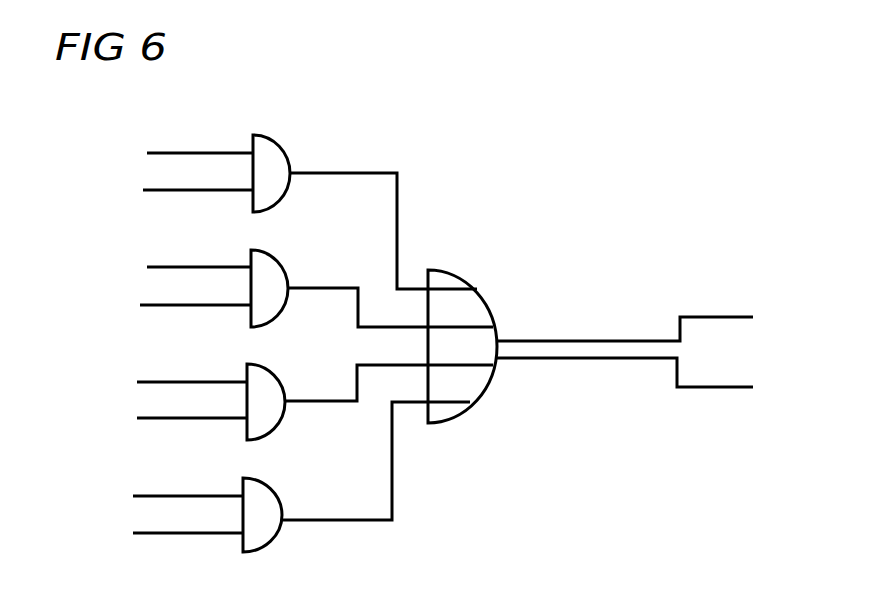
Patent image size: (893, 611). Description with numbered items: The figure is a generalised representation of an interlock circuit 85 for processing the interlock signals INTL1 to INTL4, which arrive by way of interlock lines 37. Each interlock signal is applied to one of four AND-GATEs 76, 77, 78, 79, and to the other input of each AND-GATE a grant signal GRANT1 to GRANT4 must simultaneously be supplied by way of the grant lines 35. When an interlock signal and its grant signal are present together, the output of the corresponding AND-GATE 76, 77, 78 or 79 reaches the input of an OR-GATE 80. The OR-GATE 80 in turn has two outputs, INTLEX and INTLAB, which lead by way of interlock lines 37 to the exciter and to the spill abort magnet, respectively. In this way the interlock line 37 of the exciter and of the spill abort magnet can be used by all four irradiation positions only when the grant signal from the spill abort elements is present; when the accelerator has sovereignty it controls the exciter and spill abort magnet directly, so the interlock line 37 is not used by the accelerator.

The grant lines 35 is at (199, 152).
The interlock lines 37 is at (192, 190).
The AND-GATE 76 is at (284, 207).
The AND-GATE 77 is at (282, 321).
The AND-GATE 78 is at (279, 416).
The AND-GATE 79 is at (277, 528).
The OR-GATE 80 is at (462, 416).
The interlock circuit 85 is at (683, 140).